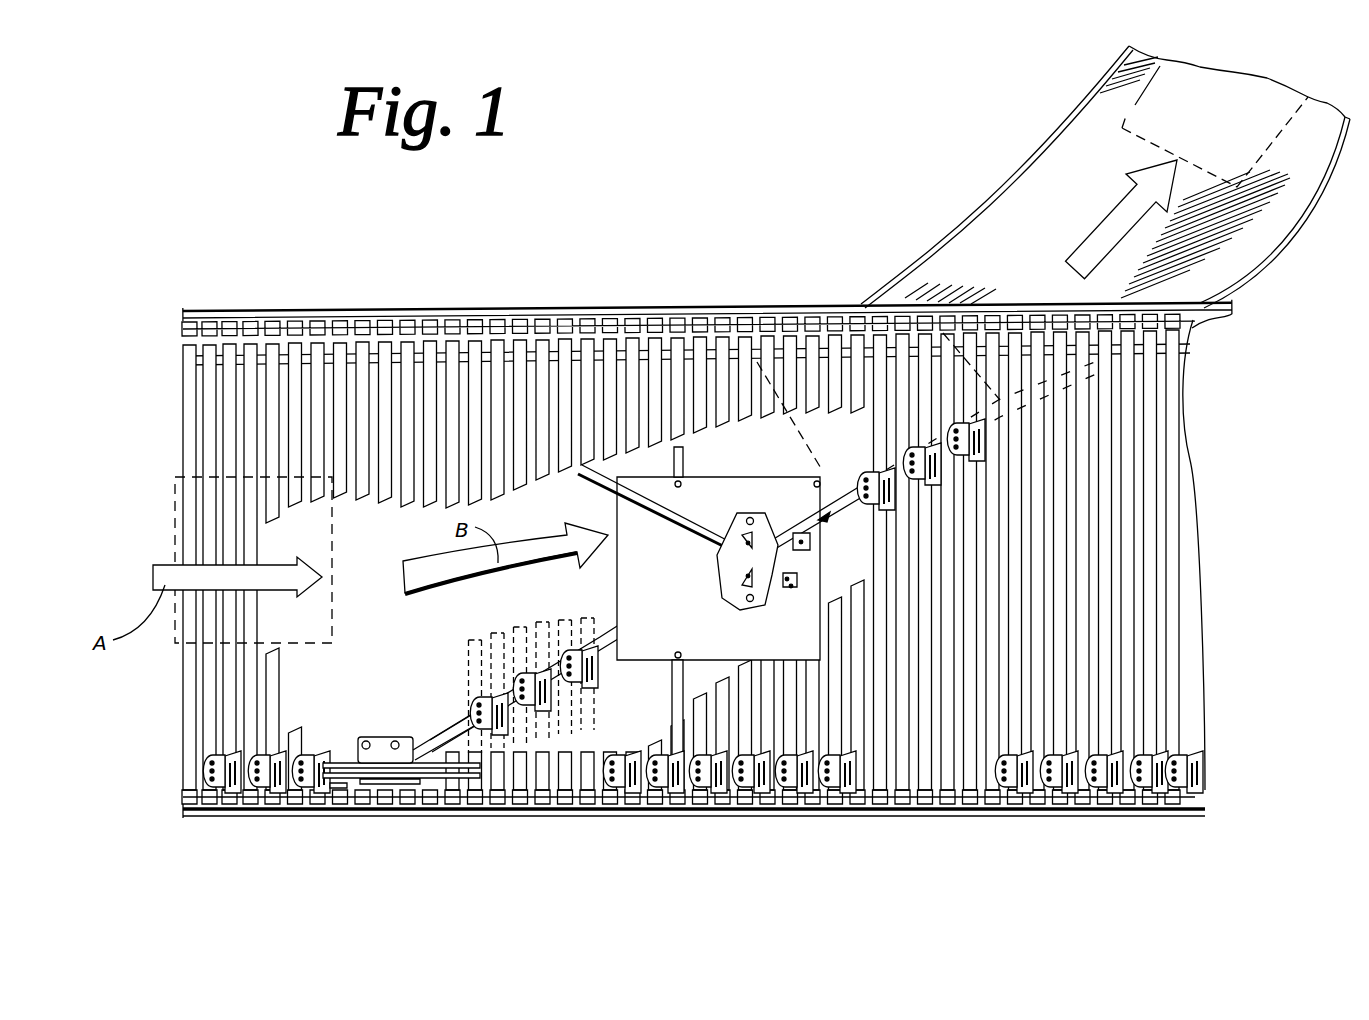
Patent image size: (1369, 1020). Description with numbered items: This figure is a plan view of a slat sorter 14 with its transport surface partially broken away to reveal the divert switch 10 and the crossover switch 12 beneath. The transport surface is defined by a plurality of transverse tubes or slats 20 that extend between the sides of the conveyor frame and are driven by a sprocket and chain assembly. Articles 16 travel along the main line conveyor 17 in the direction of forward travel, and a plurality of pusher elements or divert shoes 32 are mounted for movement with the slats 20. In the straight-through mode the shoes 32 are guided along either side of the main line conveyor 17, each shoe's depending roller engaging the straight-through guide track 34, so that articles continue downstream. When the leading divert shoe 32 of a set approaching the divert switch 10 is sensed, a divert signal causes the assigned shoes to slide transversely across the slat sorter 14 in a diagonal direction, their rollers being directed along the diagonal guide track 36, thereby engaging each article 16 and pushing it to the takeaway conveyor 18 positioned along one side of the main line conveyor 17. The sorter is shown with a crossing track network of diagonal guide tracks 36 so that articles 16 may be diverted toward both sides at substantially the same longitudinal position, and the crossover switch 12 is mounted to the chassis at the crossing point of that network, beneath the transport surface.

The divert switch 10 is at (384, 826).
The crossover switch 12 is at (789, 498).
The slat sorter 14 is at (658, 292).
The articles 16 is at (225, 470).
The main line conveyor 17 is at (410, 380).
The takeaway conveyor 18 is at (1042, 183).
The slats 20 is at (973, 773).
The divert shoes 32 is at (660, 790).
The straight-through guide track 34 is at (875, 772).
The diagonal guide track 36 is at (719, 570).